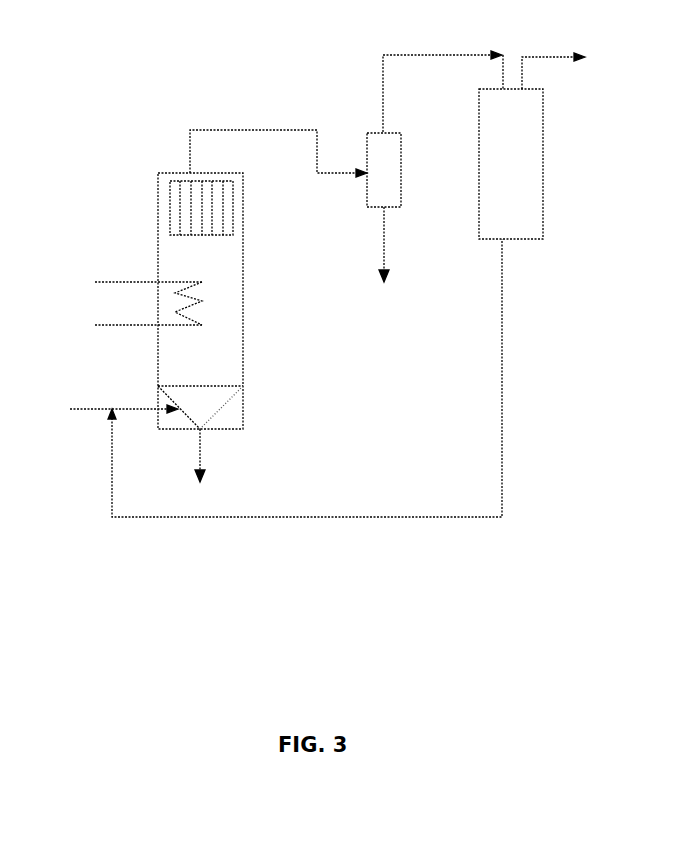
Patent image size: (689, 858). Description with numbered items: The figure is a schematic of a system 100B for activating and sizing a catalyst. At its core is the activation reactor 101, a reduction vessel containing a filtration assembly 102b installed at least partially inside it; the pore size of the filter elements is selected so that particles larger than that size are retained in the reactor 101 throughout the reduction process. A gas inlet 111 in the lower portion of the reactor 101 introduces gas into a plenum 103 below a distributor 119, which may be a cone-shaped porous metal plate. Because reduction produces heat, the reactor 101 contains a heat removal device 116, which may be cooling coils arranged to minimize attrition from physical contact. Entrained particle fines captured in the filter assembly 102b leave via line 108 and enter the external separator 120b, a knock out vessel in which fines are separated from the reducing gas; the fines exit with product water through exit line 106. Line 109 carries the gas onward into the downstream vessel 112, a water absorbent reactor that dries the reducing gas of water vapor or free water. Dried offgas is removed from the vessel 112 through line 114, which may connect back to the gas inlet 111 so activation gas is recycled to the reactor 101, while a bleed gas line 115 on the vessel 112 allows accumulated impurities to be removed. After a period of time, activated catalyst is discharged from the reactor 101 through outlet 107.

The system 100B is at (150, 80).
The activation reactor 101 is at (225, 311).
The filtration assembly 102b is at (218, 207).
The plenum 103 is at (168, 425).
The exit line 106 is at (413, 244).
The outlet 107 is at (203, 471).
The line 108 is at (278, 139).
The line 109 is at (443, 78).
The gas inlet 111 is at (121, 395).
The downstream vessel 112 is at (513, 153).
The line 114 is at (305, 378).
The bleed gas line 115 is at (553, 56).
The heat removal device 116 is at (147, 289).
The distributor 119 is at (200, 407).
The external separator 120b is at (388, 175).